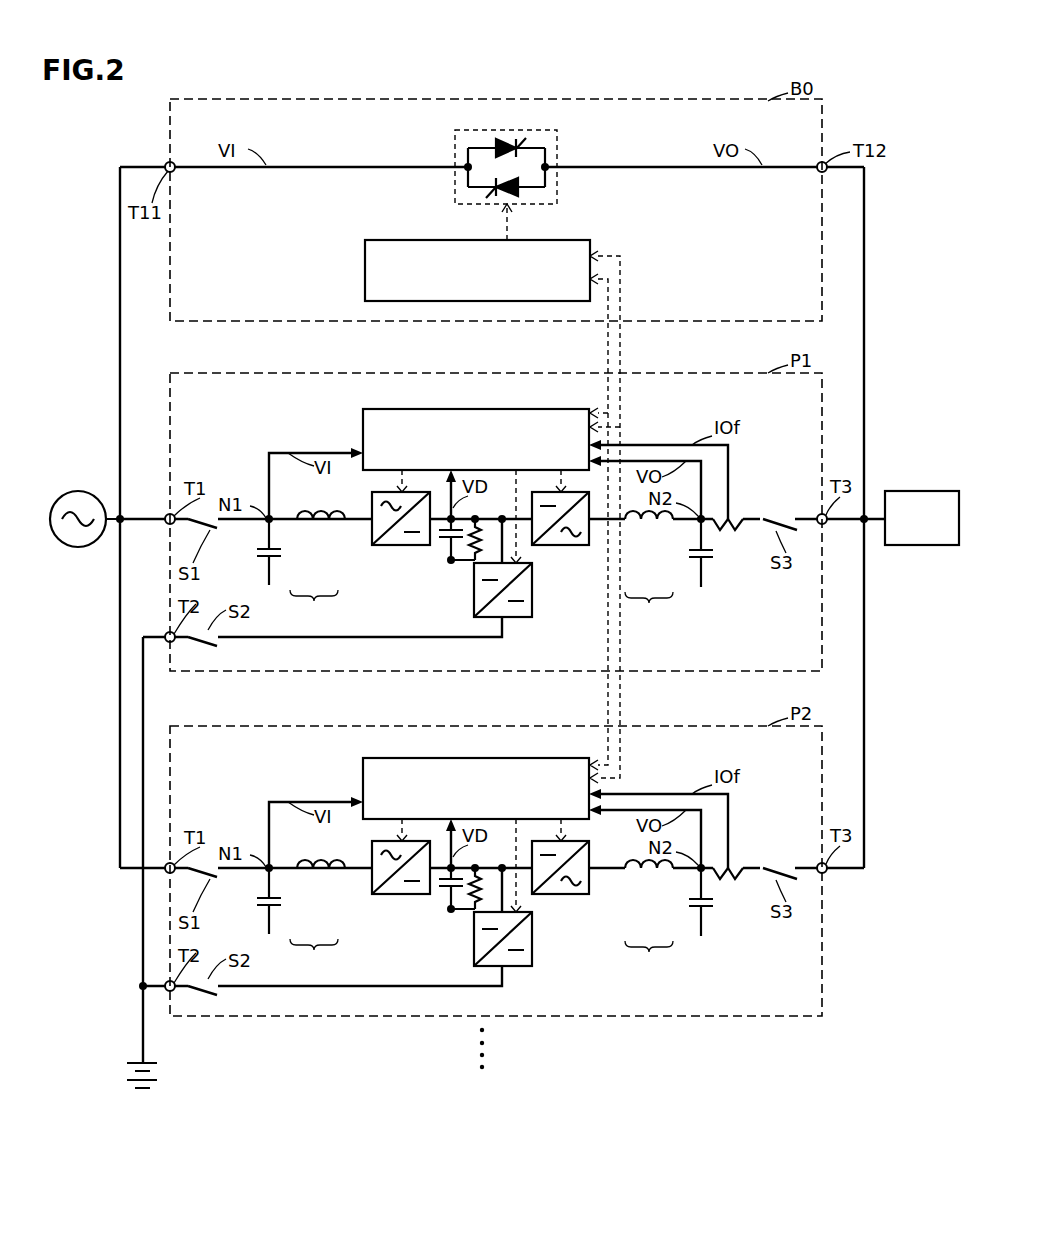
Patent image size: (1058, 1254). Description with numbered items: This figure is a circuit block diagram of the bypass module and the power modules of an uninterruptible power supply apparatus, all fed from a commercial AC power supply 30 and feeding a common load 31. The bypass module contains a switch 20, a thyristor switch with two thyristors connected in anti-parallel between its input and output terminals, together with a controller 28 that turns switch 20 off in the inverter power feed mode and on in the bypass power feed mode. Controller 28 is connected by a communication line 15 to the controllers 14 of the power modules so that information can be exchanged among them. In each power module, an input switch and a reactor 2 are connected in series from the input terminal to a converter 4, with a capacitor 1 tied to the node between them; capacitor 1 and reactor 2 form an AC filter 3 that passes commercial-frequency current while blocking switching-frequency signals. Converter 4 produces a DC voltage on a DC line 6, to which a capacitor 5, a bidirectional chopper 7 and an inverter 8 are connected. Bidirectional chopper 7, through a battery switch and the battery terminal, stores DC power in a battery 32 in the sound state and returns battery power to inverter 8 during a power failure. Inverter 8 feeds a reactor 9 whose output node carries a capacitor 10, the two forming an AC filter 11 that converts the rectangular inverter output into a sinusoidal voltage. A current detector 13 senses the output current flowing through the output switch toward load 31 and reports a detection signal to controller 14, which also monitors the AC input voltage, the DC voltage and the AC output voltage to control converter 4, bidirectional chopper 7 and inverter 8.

The capacitor 1 is at (286, 552).
The reactor 2 is at (319, 528).
The AC filter 3 is at (314, 780).
The converter 4 is at (383, 547).
The capacitor 5 is at (439, 544).
The DC line 6 is at (484, 526).
The bidirectional chopper 7 is at (473, 597).
The inverter 8 is at (556, 545).
The reactor 9 is at (649, 526).
The capacitor 10 is at (690, 559).
The AC filter 11 is at (649, 782).
The current detector 13 is at (730, 527).
The controller 14 is at (542, 409).
The communication line 15 is at (620, 346).
The switch 20 is at (542, 131).
The controller 28 is at (574, 241).
The commercial AC power supply 30 is at (78, 491).
The load 31 is at (922, 491).
The battery 32 is at (151, 1064).